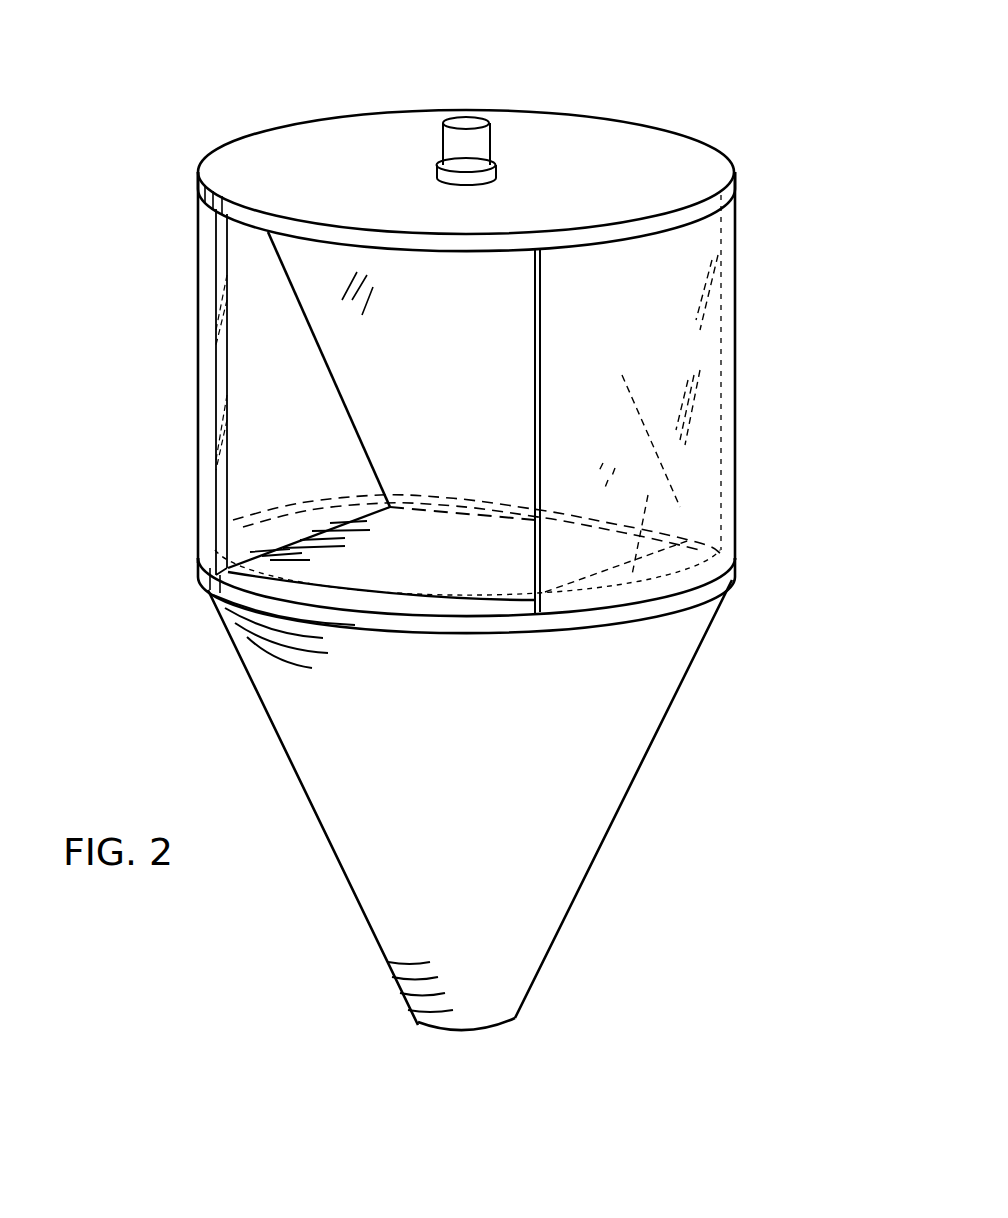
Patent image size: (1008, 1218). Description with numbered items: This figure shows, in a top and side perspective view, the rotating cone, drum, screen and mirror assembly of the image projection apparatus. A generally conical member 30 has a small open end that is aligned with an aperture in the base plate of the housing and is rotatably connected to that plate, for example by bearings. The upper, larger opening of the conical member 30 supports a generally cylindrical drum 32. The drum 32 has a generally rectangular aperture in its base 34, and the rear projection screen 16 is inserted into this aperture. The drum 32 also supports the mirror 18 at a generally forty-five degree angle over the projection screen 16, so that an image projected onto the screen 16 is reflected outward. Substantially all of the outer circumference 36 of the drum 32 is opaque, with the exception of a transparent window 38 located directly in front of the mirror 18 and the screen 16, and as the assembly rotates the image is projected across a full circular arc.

The rear projection screen 16 is at (448, 553).
The mirror 18 is at (352, 417).
The conical member 30 is at (572, 906).
The cylindrical drum 32 is at (740, 483).
The base 34 is at (612, 613).
The outer circumference 36 is at (205, 444).
The transparent window 38 is at (261, 270).